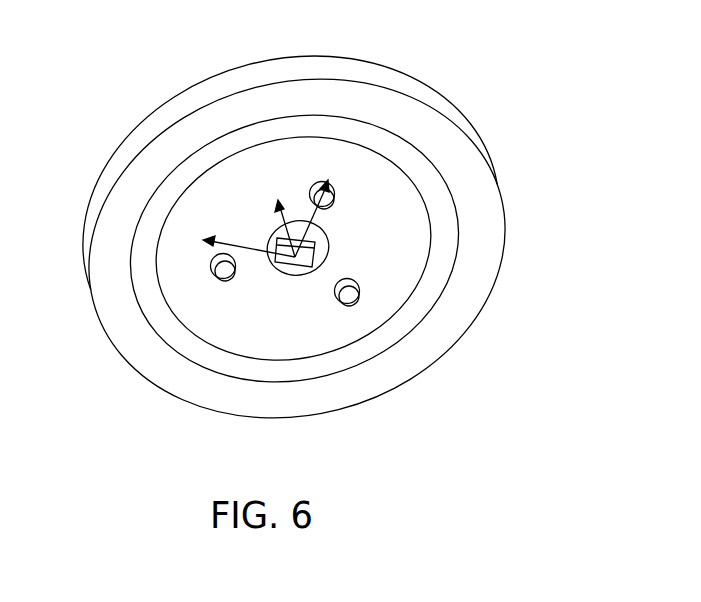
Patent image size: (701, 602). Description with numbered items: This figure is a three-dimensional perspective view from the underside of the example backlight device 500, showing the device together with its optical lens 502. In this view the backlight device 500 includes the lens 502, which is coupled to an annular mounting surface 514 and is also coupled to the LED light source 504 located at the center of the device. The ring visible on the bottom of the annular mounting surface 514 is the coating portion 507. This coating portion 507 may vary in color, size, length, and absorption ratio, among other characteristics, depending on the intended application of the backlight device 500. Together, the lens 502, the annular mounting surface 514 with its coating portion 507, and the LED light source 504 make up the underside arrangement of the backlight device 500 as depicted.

The backlight device 500 is at (580, 30).
The optical lens 502 is at (416, 80).
The LED light source 504 is at (284, 262).
The coating portion 507 is at (422, 300).
The annular mounting surface 514 is at (483, 229).